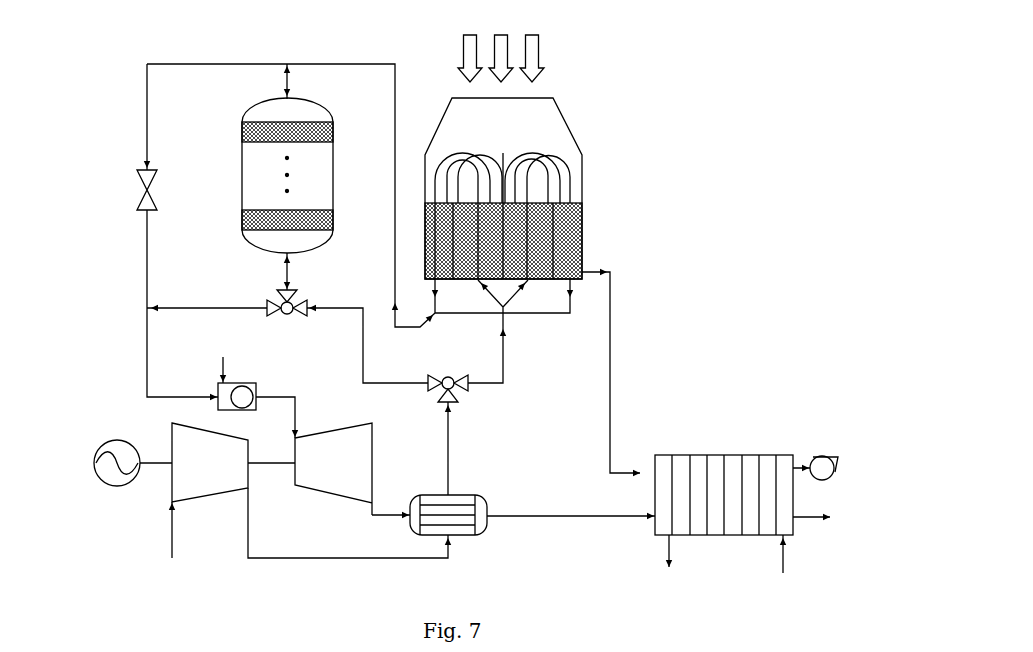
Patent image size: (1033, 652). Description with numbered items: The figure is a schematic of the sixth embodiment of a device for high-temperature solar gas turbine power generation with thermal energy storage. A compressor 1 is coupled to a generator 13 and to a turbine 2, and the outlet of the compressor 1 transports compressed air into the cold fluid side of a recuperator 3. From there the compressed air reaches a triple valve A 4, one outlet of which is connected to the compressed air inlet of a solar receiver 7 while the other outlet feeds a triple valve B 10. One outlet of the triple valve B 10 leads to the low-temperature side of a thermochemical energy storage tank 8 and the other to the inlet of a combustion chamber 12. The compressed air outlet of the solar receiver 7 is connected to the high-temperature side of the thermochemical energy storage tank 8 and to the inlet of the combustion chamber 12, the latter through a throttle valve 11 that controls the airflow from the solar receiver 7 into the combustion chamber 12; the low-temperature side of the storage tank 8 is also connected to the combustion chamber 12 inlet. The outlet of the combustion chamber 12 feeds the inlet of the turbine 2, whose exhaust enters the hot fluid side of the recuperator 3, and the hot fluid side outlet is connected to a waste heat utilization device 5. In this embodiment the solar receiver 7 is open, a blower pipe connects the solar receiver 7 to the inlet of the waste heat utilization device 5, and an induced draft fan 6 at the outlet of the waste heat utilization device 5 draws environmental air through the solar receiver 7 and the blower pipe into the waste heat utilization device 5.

The compressor 1 is at (195, 462).
The turbine 2 is at (357, 465).
The recuperator 3 is at (457, 527).
The triple valve A 4 is at (453, 388).
The waste heat utilization device 5 is at (758, 497).
The induced draft fan 6 is at (818, 462).
The solar receiver 7 is at (505, 155).
The thermochemical energy storage tank 8 is at (255, 152).
The triple valve B 10 is at (275, 305).
The throttle valve 11 is at (137, 175).
The combustion chamber 12 is at (240, 400).
The generator 13 is at (110, 455).